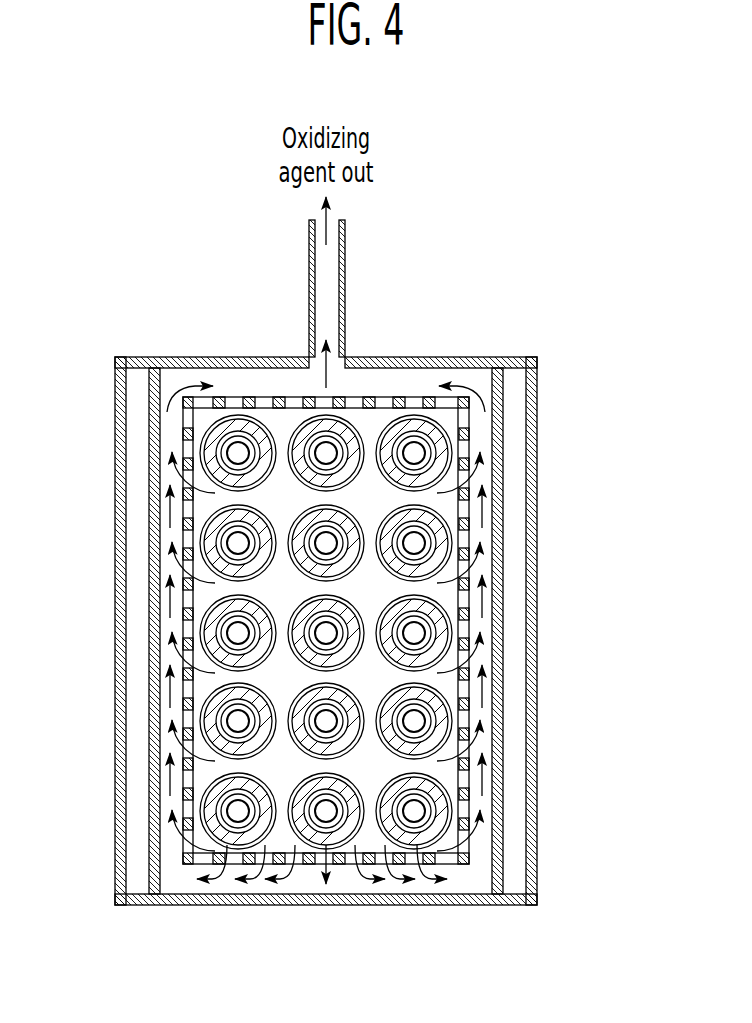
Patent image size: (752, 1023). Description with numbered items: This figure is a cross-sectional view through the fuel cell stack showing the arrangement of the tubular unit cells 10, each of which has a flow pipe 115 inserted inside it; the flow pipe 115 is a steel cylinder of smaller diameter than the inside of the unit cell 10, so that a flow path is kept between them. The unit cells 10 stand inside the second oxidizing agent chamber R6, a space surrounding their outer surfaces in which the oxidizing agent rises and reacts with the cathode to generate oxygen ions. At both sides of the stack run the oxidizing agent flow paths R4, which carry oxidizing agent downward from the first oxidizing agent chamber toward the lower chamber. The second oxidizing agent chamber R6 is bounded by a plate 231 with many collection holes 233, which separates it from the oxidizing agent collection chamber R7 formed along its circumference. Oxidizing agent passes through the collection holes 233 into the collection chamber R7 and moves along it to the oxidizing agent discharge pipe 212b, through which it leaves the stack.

The oxidizing agent discharge pipe 212b is at (345, 283).
The plate 231 is at (402, 398).
The collection hole 233 is at (333, 868).
The unit cell 10 is at (432, 442).
The flow pipe 115 is at (420, 480).
The oxidizing agent flow path R4 is at (133, 555).
The second oxidizing agent chamber R6 is at (377, 583).
The oxidizing agent collection chamber R7 is at (259, 381).